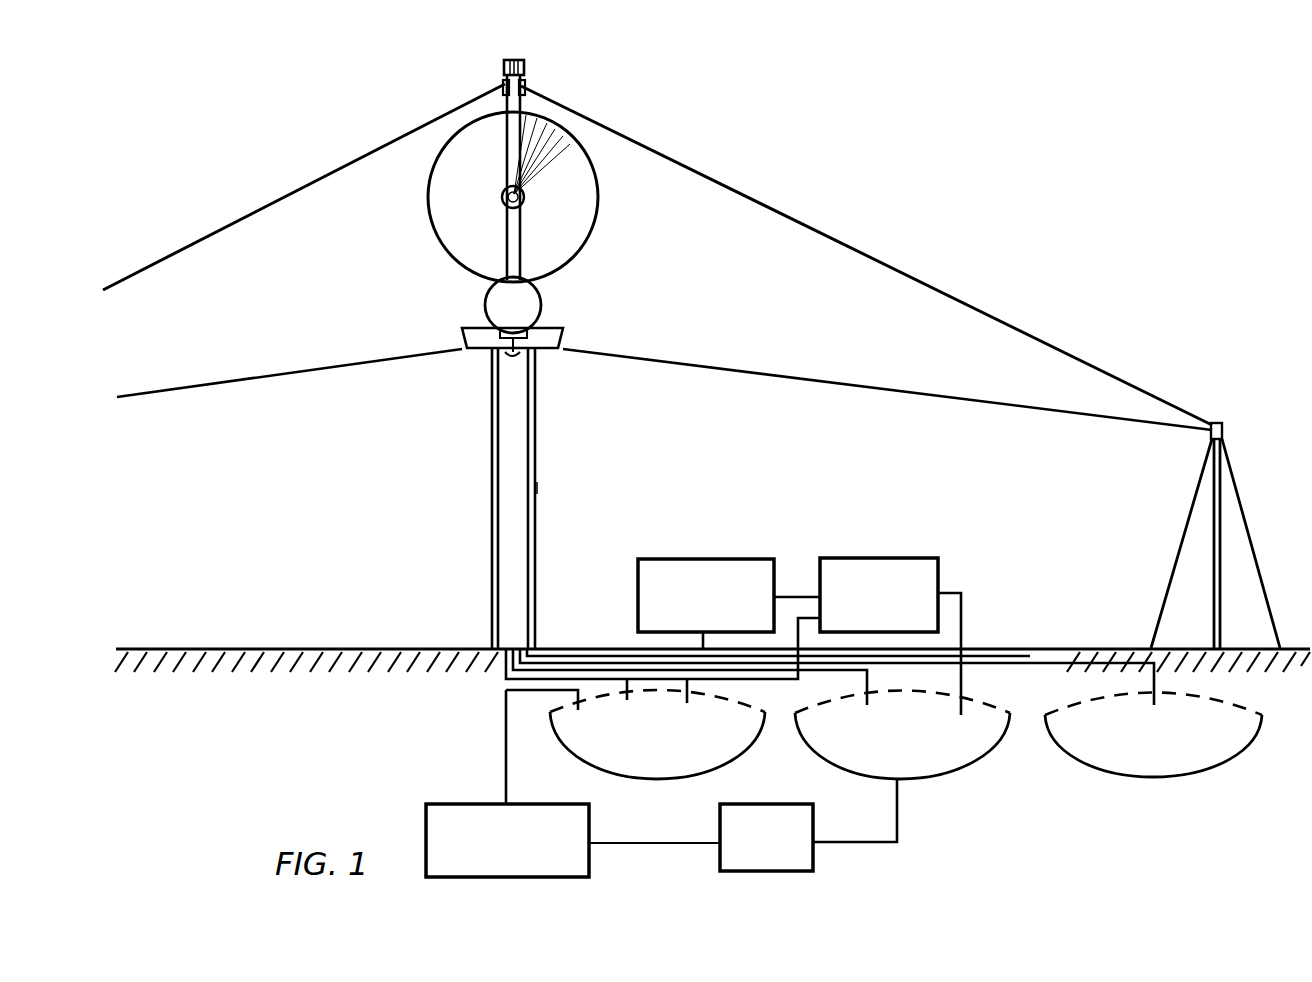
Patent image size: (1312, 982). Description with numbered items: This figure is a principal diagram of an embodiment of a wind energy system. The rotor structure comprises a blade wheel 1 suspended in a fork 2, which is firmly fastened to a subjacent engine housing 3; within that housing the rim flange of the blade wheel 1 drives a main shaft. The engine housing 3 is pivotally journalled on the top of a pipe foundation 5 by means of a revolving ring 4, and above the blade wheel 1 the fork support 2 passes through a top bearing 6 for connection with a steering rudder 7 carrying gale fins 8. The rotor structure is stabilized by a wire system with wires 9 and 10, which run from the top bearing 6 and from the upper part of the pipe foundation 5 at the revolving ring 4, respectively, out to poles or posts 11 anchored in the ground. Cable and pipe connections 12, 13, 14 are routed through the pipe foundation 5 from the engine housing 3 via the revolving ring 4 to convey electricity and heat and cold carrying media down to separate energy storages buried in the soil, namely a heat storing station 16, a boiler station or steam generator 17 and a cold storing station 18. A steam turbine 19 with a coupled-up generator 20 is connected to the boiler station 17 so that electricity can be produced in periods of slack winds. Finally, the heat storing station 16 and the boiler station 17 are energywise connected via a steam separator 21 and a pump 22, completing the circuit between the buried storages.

The blade wheel 1 is at (596, 232).
The fork 2 is at (521, 238).
The engine housing 3 is at (541, 302).
The revolving ring 4 is at (530, 360).
The pipe foundation 5 is at (537, 465).
The top bearing 6 is at (503, 84).
The steering rudder 7 is at (524, 65).
The gale fins 8 is at (526, 80).
The wires 9 is at (297, 188).
The wires 10 is at (778, 372).
The poles or posts 11 is at (1213, 584).
The cable and pipe connection 12 is at (813, 687).
The cable and pipe connection 13 is at (503, 664).
The cable and pipe connection 14 is at (1030, 660).
The heat storing station 16 is at (727, 765).
The boiler station or steam generator 17 is at (972, 765).
The cold storing station 18 is at (1225, 767).
The steam turbine 19 is at (938, 564).
The generator 20 is at (638, 561).
The steam separator 21 is at (426, 814).
The pump 22 is at (720, 816).